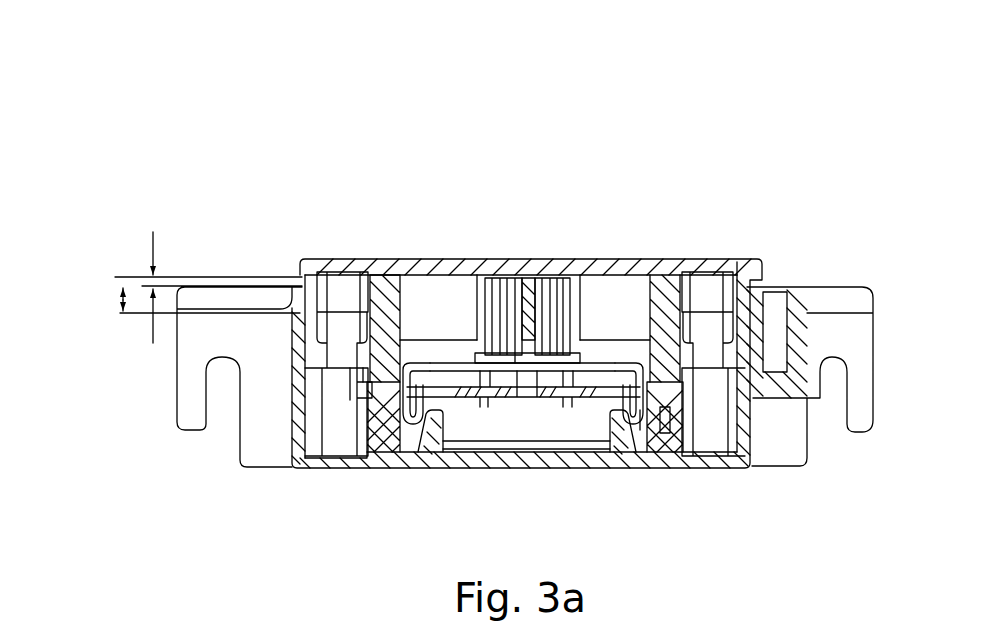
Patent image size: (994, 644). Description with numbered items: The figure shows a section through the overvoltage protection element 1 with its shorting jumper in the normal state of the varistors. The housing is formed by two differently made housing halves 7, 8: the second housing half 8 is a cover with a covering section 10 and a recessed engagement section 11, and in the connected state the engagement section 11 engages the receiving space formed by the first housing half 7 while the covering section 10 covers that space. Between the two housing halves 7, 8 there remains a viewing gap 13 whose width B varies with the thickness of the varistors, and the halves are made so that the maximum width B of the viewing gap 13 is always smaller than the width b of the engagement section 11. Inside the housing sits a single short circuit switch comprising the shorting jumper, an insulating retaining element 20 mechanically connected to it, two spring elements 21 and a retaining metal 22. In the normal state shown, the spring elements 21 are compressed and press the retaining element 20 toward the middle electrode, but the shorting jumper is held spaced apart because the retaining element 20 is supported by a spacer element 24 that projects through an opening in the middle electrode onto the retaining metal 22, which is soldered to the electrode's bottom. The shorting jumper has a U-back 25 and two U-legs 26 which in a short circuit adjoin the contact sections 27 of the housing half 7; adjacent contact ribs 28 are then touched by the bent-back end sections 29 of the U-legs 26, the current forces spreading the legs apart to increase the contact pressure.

The overvoltage protection element 1 is at (297, 184).
The first housing half 7 is at (546, 460).
The second housing half 8 is at (478, 236).
The covering section 10 is at (620, 262).
The engagement section 11 is at (752, 262).
The viewing gap 13 is at (298, 278).
The retaining element 20 is at (533, 300).
The spring elements 21 is at (483, 300).
The retaining metal 22 is at (520, 397).
The spacer element 24 is at (572, 330).
The U-back 25 is at (412, 372).
The U-legs 26 is at (398, 262).
The contact sections 27 is at (385, 430).
The contact ribs 28 is at (428, 452).
The end section 29 is at (420, 420).
The width of the viewing gap B is at (150, 277).
The width of the engagement section b is at (125, 300).